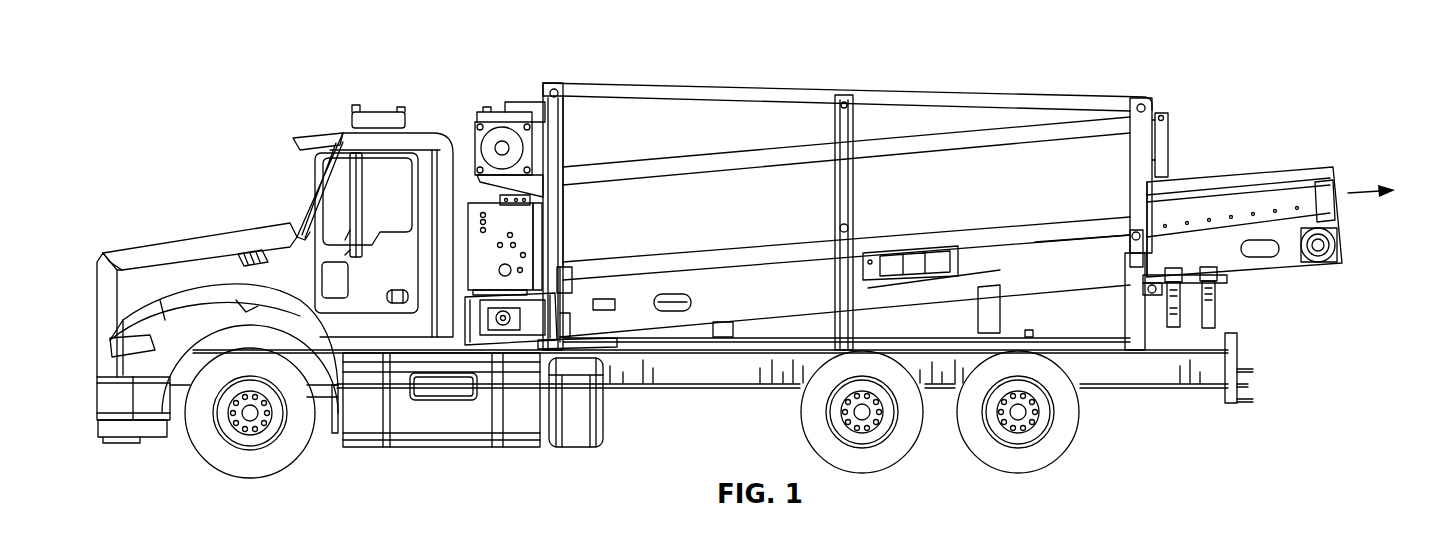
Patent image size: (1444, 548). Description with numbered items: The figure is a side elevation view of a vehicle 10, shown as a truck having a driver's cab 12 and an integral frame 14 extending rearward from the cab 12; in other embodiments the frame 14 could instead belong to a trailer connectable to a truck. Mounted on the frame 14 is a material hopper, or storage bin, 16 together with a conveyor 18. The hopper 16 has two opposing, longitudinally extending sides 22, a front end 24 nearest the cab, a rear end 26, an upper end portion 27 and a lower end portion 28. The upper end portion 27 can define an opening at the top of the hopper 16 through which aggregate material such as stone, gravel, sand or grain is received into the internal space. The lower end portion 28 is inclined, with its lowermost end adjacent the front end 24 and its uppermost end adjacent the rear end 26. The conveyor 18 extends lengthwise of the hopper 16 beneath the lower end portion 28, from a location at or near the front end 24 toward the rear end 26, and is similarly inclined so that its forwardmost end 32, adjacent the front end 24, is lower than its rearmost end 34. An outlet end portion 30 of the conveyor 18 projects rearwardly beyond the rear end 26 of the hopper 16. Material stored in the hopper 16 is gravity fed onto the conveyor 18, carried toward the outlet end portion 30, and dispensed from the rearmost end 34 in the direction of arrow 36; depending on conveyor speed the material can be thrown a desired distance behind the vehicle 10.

The vehicle 10 is at (862, 73).
The driver's cab 12 is at (423, 137).
The frame 14 is at (665, 375).
The material hopper 16 is at (1052, 113).
The conveyor 18 is at (1232, 258).
The sides 22 is at (1100, 177).
The front end 24 is at (557, 117).
The rear end 26 is at (1157, 103).
The upper end portion 27 is at (940, 85).
The lower end portion 28 is at (1033, 247).
The outlet end portion 30 is at (1293, 257).
The forwardmost end 32 is at (568, 366).
The rearmost end 34 is at (1338, 248).
The arrow 36 is at (1367, 188).